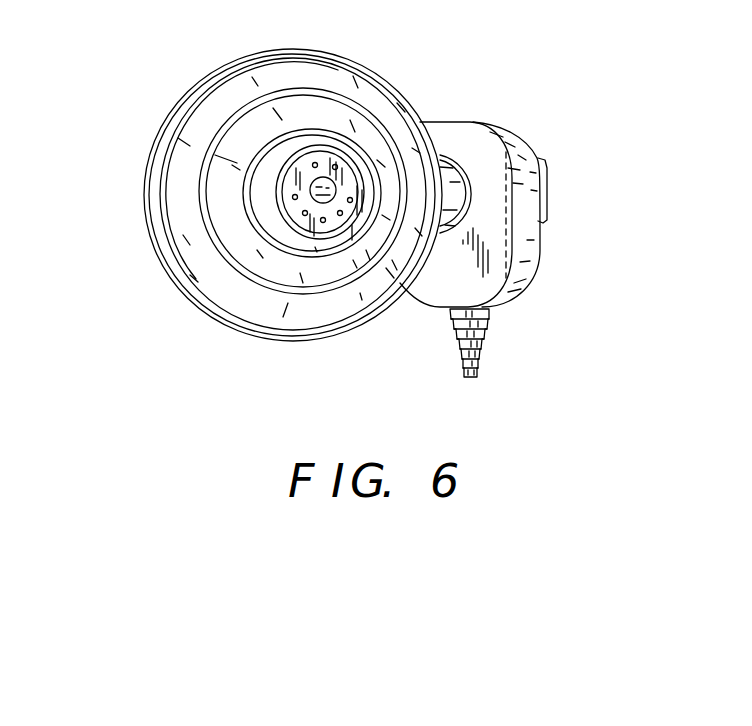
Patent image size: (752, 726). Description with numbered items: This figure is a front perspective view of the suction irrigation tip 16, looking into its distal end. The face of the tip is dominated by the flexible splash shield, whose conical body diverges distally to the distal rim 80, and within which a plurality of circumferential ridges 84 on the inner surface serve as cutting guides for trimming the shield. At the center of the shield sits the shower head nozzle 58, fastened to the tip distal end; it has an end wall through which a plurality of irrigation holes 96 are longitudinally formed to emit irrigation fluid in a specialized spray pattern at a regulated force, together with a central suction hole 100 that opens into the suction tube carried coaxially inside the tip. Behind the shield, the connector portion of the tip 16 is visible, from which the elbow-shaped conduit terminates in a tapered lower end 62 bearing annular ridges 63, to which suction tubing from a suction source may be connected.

The suction irrigation tip 16 is at (521, 95).
The shower head nozzle 58 is at (328, 156).
The tapered lower end 62 is at (455, 354).
The annular ridges 63 is at (441, 367).
The distal rim 80 is at (193, 85).
The circumferential ridges 84 is at (280, 210).
The irrigation holes 96 is at (292, 196).
The central suction hole 100 is at (300, 210).